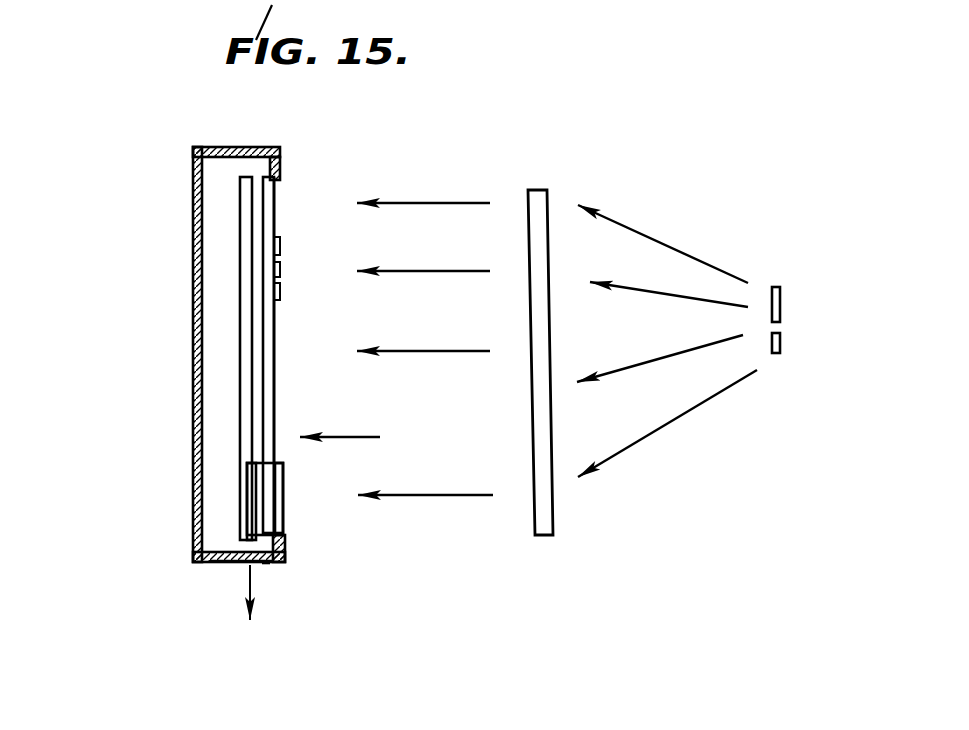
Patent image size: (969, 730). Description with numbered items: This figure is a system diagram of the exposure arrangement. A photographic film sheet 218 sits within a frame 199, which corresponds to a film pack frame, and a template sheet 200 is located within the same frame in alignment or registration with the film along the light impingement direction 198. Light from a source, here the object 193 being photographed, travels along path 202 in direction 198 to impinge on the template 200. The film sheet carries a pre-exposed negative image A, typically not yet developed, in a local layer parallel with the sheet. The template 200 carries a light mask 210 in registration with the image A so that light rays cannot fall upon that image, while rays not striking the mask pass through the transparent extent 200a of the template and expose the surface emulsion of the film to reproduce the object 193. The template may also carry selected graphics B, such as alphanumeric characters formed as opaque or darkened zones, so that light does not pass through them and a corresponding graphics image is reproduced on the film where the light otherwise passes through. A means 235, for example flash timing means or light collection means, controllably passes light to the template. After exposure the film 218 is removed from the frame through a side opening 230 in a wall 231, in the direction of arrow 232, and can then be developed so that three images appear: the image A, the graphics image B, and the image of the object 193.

The object 193 is at (781, 292).
The light impingement direction 198 is at (410, 271).
The frame 199 is at (183, 133).
The template sheet 200 is at (275, 205).
The transparent extent 200a is at (275, 380).
The light travel path 202 is at (700, 403).
The light mask 210 is at (283, 483).
The film sheet 218 is at (240, 225).
The side opening 230 is at (238, 563).
The wall 231 is at (270, 562).
The film removal arrow 232 is at (245, 565).
The light passing means 235 is at (553, 512).
The pre-exposed image A is at (255, 513).
The graphics B is at (280, 290).